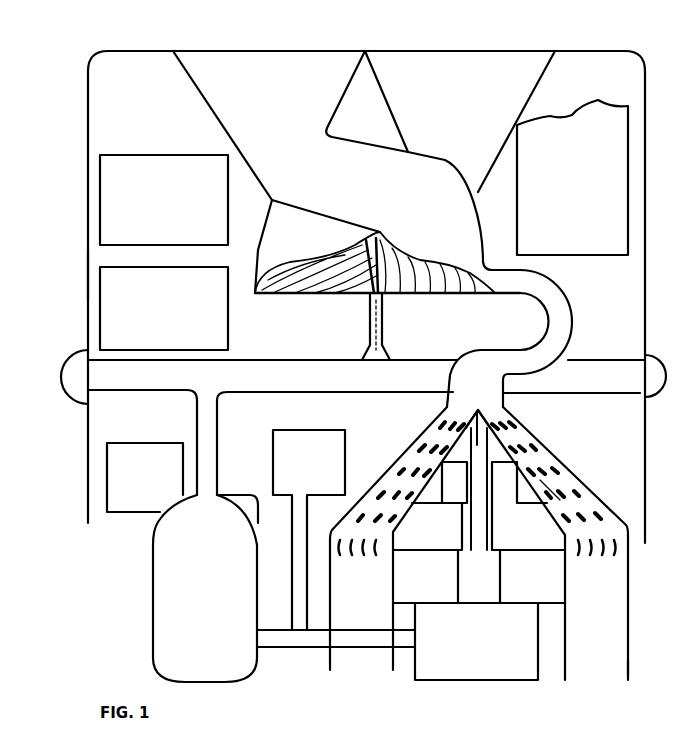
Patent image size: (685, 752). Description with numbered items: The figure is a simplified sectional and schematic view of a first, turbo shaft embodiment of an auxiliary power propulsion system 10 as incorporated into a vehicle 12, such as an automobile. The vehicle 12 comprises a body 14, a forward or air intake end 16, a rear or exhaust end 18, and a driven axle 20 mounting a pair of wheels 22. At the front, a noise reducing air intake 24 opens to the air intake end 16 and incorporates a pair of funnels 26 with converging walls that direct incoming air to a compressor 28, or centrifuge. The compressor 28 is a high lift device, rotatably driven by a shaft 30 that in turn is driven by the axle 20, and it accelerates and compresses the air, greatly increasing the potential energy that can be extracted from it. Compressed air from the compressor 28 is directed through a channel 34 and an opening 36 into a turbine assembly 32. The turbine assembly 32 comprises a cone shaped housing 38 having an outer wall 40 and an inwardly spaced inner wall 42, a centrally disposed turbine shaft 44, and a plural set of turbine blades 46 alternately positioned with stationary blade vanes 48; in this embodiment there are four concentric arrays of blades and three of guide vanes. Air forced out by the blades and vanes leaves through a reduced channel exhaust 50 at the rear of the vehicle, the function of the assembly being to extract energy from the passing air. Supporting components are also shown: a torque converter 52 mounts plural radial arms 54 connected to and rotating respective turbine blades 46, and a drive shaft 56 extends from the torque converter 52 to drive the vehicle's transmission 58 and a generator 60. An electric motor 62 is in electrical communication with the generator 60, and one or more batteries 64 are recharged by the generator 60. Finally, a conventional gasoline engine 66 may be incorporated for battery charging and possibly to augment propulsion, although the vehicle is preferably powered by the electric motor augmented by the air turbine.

The system 10 is at (565, 33).
The vehicle 12 is at (93, 50).
The body 14 is at (85, 256).
The air intake end 16 is at (334, 50).
The exhaust end 18 is at (628, 675).
The driven axle 20 is at (445, 358).
The wheels 22 is at (90, 410).
The noise reducing air intake 24 is at (367, 50).
The funnels 26 is at (231, 128).
The compressor 28 is at (388, 240).
The shaft 30 is at (367, 337).
The turbine assembly 32 is at (560, 450).
The channel 34 is at (578, 300).
The opening 36 is at (437, 412).
The cone shaped housing 38 is at (603, 503).
The outer wall 40 is at (370, 488).
The inner wall 42 is at (437, 475).
The turbine shaft 44 is at (508, 605).
The turbine blades 46 is at (518, 420).
The blade vanes 48 is at (575, 463).
The reduced channel exhaust 50 is at (625, 590).
The torque converter 52 is at (440, 681).
The radial arms 54 is at (535, 500).
The drive shaft 56 is at (316, 648).
The transmission 58 is at (152, 553).
The generator 60 is at (273, 448).
The electric motor 62 is at (170, 443).
The batteries 64 is at (130, 155).
The gasoline engine 66 is at (572, 120).